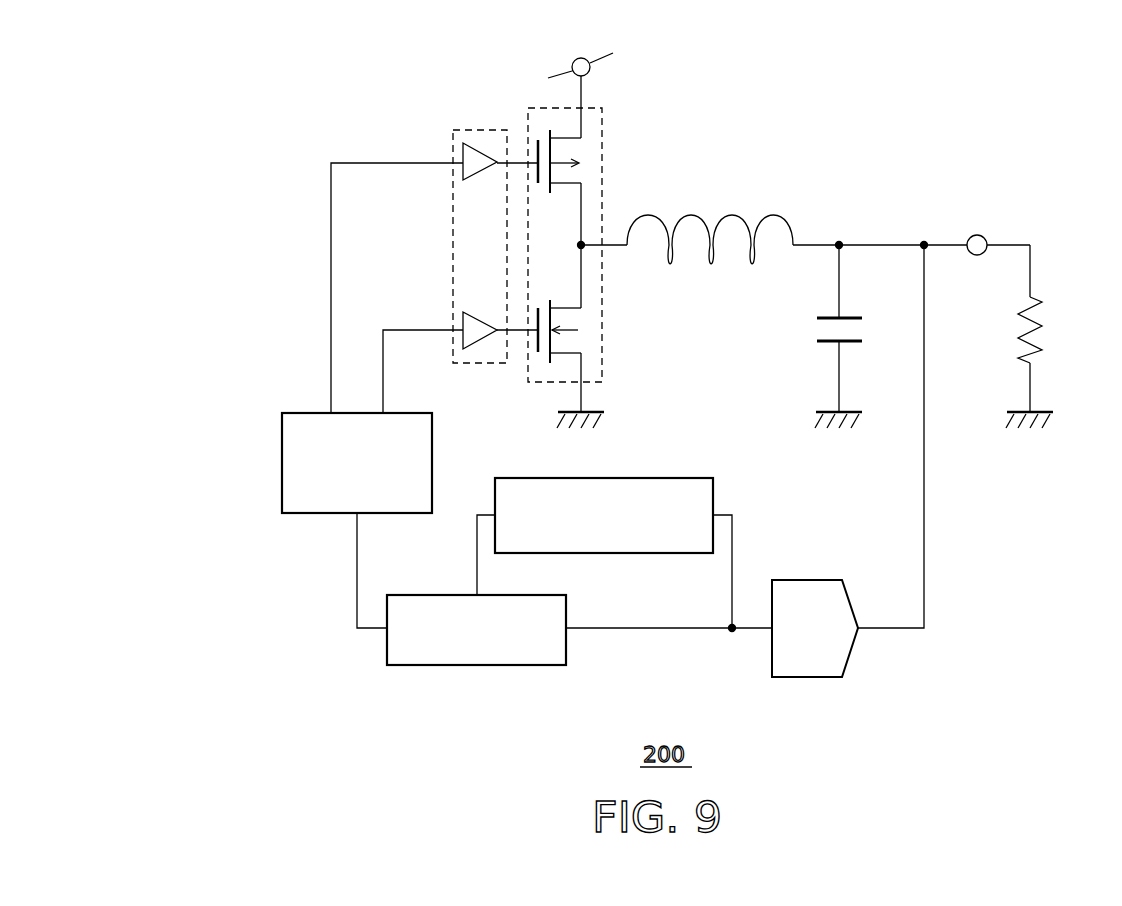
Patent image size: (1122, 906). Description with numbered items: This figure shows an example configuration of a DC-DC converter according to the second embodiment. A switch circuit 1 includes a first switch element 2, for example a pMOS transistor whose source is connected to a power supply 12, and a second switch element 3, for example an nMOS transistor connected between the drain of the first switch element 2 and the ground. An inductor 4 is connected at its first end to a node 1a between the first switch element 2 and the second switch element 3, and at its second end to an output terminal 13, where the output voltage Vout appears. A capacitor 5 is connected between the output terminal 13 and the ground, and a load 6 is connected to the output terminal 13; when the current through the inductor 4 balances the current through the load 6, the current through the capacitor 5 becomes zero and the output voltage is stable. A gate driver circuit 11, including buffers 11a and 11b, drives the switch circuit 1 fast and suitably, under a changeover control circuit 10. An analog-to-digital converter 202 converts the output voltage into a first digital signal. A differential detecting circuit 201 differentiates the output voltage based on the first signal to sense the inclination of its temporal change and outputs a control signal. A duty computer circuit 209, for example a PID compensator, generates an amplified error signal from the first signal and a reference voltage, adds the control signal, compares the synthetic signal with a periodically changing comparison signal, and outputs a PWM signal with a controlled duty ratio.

The switch circuit 1 is at (602, 122).
The node 1a is at (588, 242).
The first switch element 2 is at (580, 163).
The second switch element 3 is at (580, 330).
The inductor 4 is at (731, 215).
The capacitor 5 is at (817, 318).
The load 6 is at (1042, 318).
The changeover control circuit 10 is at (282, 466).
The gate driver circuit 11 is at (453, 148).
The buffer 11a is at (487, 143).
The buffer 11b is at (487, 312).
The power supply 12 is at (572, 61).
The output terminal 13 is at (988, 243).
The differential detecting circuit 201 is at (652, 478).
The analog-to-digital converter 202 is at (808, 580).
The duty computer circuit 209 is at (490, 665).